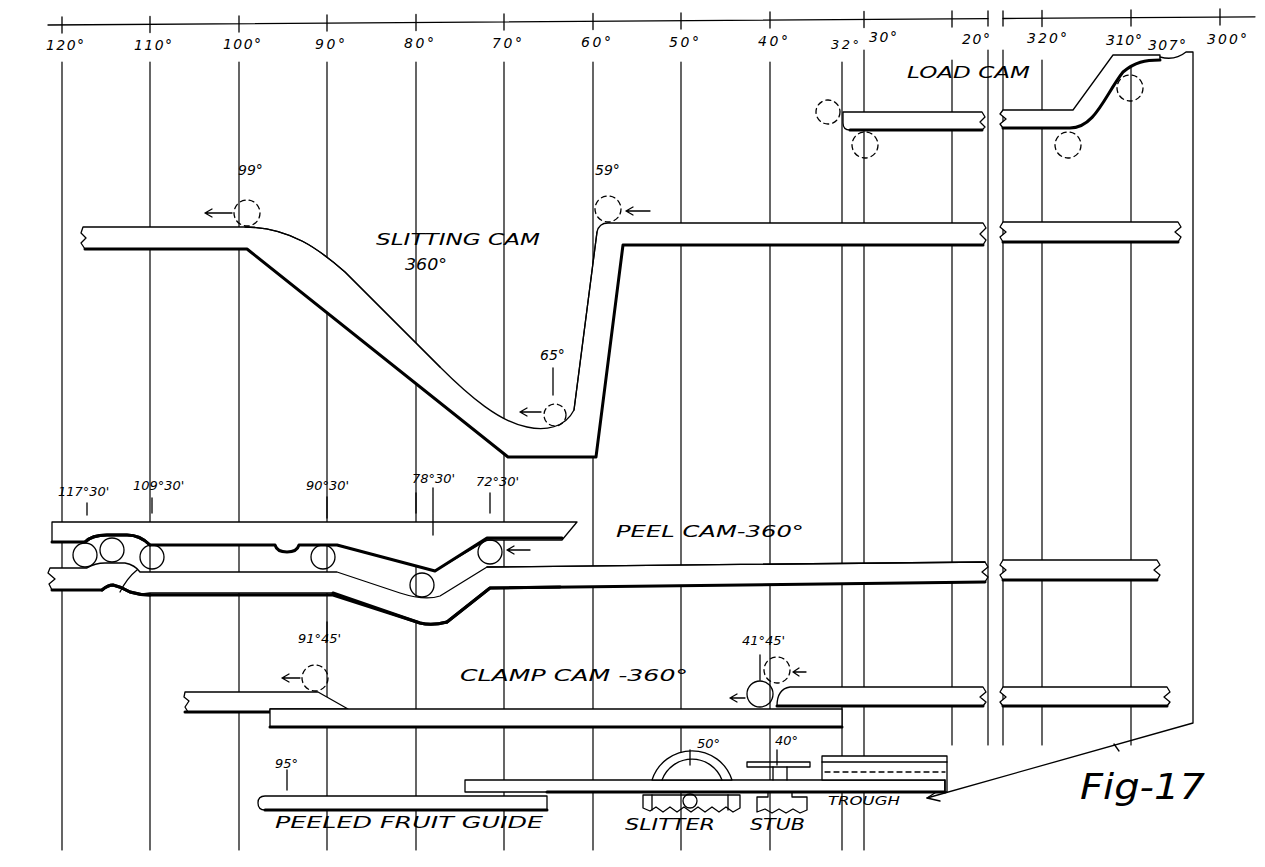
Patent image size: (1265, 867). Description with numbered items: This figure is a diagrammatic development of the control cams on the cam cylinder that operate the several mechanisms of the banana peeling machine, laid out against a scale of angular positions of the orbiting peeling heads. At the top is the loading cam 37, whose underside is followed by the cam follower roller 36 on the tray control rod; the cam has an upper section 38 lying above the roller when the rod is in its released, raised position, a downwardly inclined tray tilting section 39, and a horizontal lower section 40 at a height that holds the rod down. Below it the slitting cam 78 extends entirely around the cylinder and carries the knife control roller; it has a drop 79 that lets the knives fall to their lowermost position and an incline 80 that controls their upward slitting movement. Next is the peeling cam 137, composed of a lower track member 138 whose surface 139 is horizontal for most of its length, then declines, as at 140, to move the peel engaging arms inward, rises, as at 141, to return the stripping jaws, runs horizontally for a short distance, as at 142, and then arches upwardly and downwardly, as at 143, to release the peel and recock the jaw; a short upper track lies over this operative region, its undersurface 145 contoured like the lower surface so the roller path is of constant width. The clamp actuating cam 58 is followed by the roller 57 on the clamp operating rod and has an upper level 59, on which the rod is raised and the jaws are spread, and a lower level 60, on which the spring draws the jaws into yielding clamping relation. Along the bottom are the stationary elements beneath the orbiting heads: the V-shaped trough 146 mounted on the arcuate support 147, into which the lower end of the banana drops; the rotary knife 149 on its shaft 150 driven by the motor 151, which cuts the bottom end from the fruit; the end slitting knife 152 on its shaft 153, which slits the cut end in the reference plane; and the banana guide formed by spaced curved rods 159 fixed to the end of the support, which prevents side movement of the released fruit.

The cam follower roller 36 is at (1080, 153).
The loading cam 37 is at (925, 133).
The upper section 38 is at (1193, 60).
The tray tilting section 39 is at (1105, 103).
The horizontal lower section 40 is at (937, 112).
The roller 57 is at (788, 666).
The clamp actuating cam 58 is at (908, 680).
The upper level 59 is at (1068, 683).
The lower level 60 is at (585, 706).
The slitting cam 78 is at (838, 246).
The drop 79 is at (586, 322).
The incline 80 is at (408, 335).
The peeling cam 137 is at (821, 560).
The lower track member 138 is at (925, 548).
The surface 139 is at (262, 523).
The decline 140 is at (463, 583).
The rise 141 is at (393, 592).
The horizontal portion 142 is at (226, 573).
The arch 143 is at (120, 592).
The undersurface 145 is at (302, 543).
The V-shaped trough 146 is at (900, 758).
The arcuate support 147 is at (913, 783).
The rotary knife 149 is at (800, 763).
The shaft 150 is at (777, 762).
The motor 151 is at (807, 808).
The end slitting knife 152 is at (672, 760).
The shaft 153 is at (683, 801).
The curved rods 159 is at (368, 795).